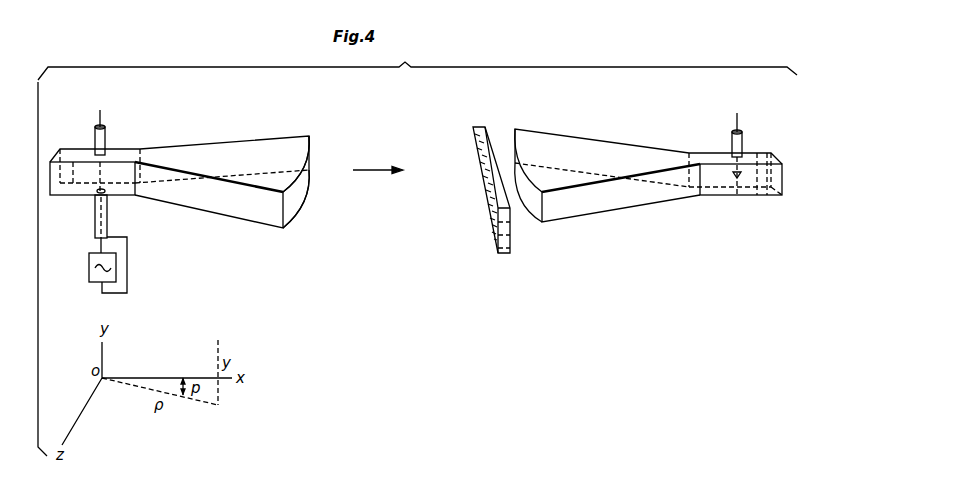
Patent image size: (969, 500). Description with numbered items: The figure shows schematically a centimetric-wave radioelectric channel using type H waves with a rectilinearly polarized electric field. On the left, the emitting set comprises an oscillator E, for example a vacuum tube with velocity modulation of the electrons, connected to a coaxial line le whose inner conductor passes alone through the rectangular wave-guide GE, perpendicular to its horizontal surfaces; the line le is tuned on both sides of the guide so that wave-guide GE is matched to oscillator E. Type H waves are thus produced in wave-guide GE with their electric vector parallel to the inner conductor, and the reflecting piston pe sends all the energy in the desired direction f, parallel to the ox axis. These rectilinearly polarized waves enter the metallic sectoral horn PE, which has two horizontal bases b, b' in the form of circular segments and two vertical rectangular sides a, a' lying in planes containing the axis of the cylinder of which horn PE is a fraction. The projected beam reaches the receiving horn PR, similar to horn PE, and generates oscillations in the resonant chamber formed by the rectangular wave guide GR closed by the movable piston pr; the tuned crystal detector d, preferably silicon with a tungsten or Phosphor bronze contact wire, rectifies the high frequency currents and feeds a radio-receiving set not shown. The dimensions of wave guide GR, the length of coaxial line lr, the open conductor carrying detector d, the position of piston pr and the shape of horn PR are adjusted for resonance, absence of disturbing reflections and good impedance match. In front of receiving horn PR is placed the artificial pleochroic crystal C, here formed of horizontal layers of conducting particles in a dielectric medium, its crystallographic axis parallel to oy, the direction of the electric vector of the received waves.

The wave-guide GE is at (95, 183).
The reflecting piston pe is at (68, 158).
The metallic sectoral horn PE is at (249, 146).
The vertical side a is at (268, 207).
The horizontal base b is at (281, 158).
The vertical side a' is at (311, 164).
The horizontal base b' is at (305, 199).
The coaxial line le is at (111, 244).
The oscillator E is at (94, 267).
The desired direction f is at (378, 181).
The artificial pleochroic crystal C is at (496, 246).
The receiving horn PR is at (615, 144).
The wave guide GR is at (729, 198).
The coaxial line lr is at (745, 135).
The movable piston pr is at (757, 183).
The tuned crystal detector d is at (728, 178).